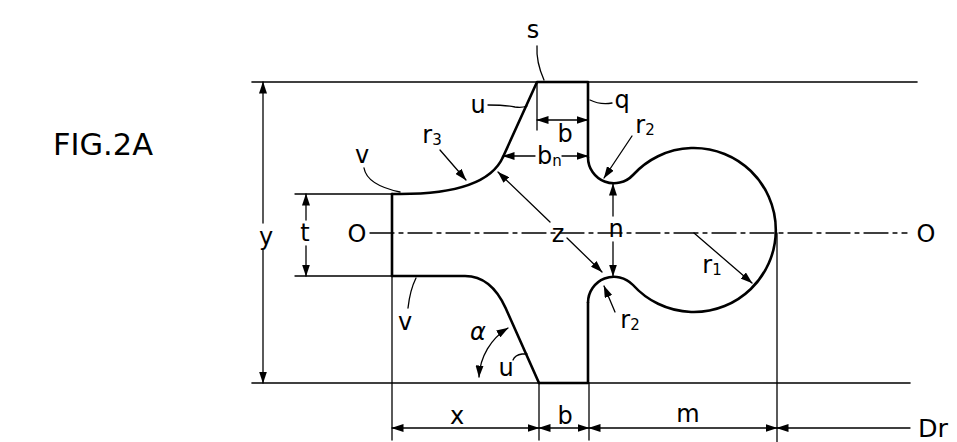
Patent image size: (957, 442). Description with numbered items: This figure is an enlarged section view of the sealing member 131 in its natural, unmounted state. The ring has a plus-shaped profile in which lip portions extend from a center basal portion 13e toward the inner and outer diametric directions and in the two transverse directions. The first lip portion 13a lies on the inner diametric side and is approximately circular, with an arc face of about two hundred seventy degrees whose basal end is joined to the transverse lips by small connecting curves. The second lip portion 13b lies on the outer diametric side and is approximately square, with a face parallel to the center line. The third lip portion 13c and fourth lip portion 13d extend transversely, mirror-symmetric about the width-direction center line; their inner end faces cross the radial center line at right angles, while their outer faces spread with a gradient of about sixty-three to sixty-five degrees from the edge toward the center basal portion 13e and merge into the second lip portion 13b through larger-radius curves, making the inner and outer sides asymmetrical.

The sealing member 131 is at (381, 68).
The first lip portion 13a is at (757, 206).
The second lip portion 13b is at (432, 201).
The third lip portion 13c is at (563, 92).
The fourth lip portion 13d is at (576, 347).
The center basal portion 13e is at (517, 250).